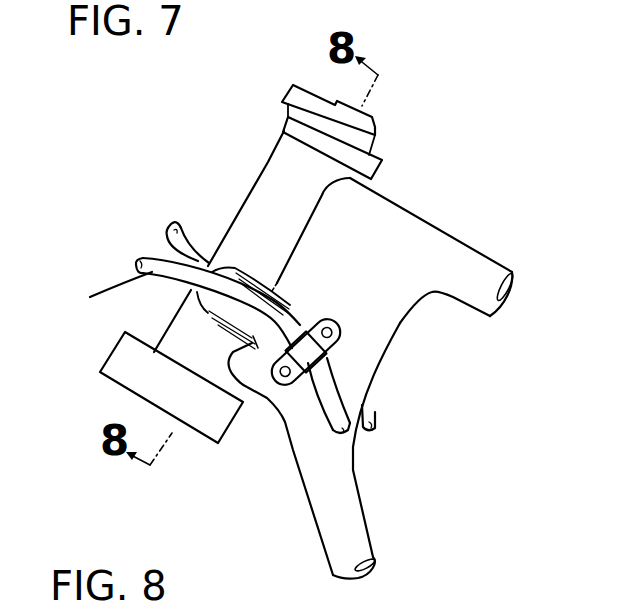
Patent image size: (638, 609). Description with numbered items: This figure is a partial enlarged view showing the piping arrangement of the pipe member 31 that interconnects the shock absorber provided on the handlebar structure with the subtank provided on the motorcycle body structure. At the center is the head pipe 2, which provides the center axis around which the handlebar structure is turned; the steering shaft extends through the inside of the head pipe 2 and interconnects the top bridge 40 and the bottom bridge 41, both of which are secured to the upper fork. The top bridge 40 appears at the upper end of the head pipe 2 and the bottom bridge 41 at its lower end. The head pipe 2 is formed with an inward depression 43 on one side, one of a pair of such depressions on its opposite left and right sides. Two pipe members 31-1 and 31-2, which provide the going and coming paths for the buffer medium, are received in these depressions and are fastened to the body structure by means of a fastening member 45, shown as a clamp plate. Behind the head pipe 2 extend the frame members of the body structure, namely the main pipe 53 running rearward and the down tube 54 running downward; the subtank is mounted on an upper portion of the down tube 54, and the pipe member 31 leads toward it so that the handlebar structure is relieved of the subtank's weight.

The head pipe 2 is at (283, 156).
The top bridge 40 is at (293, 98).
The bottom bridge 41 is at (120, 360).
The inward depression 43 is at (250, 330).
The fastening member 45 is at (330, 345).
The pipe member 31 is at (338, 410).
The pipe member 31-1 is at (150, 273).
The pipe member 31-2 is at (188, 240).
The main pipe 53 is at (480, 285).
The down tube 54 is at (337, 543).